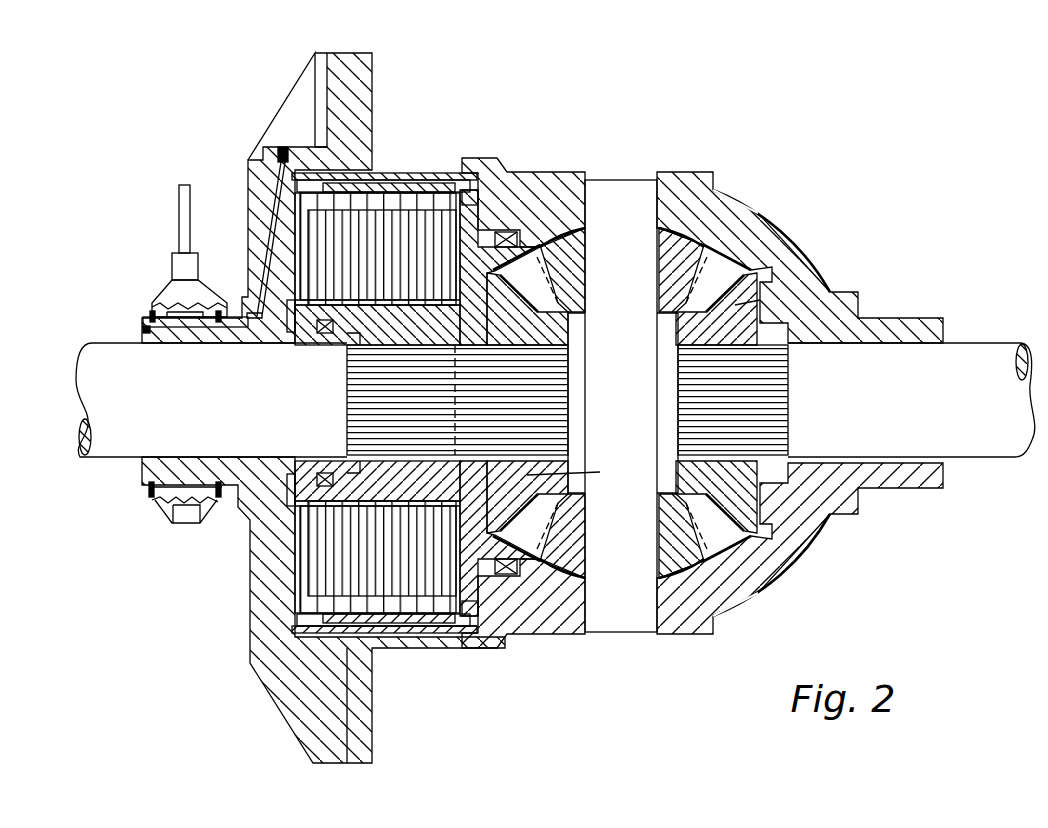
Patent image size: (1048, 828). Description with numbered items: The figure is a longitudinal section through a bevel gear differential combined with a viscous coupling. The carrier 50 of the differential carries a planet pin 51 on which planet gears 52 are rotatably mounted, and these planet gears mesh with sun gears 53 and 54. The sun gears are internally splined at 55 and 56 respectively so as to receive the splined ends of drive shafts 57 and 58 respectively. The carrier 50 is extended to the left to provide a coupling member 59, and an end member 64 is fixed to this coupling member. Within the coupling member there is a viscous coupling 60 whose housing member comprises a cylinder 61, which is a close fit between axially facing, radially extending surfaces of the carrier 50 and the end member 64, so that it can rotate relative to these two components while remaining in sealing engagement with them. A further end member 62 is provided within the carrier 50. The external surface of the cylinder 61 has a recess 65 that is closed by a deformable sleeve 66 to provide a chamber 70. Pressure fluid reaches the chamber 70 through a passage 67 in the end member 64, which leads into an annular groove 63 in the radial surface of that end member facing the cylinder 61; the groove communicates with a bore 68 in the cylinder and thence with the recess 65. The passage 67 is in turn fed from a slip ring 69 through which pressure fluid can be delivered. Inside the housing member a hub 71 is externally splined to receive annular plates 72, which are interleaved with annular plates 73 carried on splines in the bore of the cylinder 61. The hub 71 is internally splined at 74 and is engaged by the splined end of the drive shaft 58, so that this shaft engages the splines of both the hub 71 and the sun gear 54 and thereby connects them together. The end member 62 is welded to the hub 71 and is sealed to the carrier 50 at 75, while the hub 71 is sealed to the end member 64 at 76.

The carrier 50 is at (690, 185).
The planet pin 51 is at (634, 612).
The planet gears 52 is at (590, 238).
The sun gear 53 is at (735, 305).
The sun gear 54 is at (578, 470).
The internal splines 55 is at (770, 348).
The internal splines 56 is at (548, 333).
The drive shaft 57 is at (992, 440).
The drive shaft 58 is at (121, 433).
The coupling member 59 is at (480, 170).
The viscous coupling 60 is at (240, 541).
The cylinder 61 is at (395, 190).
The end member 62 is at (468, 217).
The annular groove 63 is at (290, 622).
The end member 64 is at (258, 232).
The recess 65 is at (428, 188).
The deformable sleeve 66 is at (383, 172).
The passage 67 is at (264, 261).
The bore 68 is at (284, 148).
The slip ring 69 is at (165, 293).
The chamber 70 is at (407, 642).
The hub 71 is at (340, 330).
The annular plates 72 is at (412, 500).
The annular plates 73 is at (466, 194).
The internal splines 74 is at (365, 385).
The seal 75 is at (490, 403).
The seal 76 is at (322, 336).